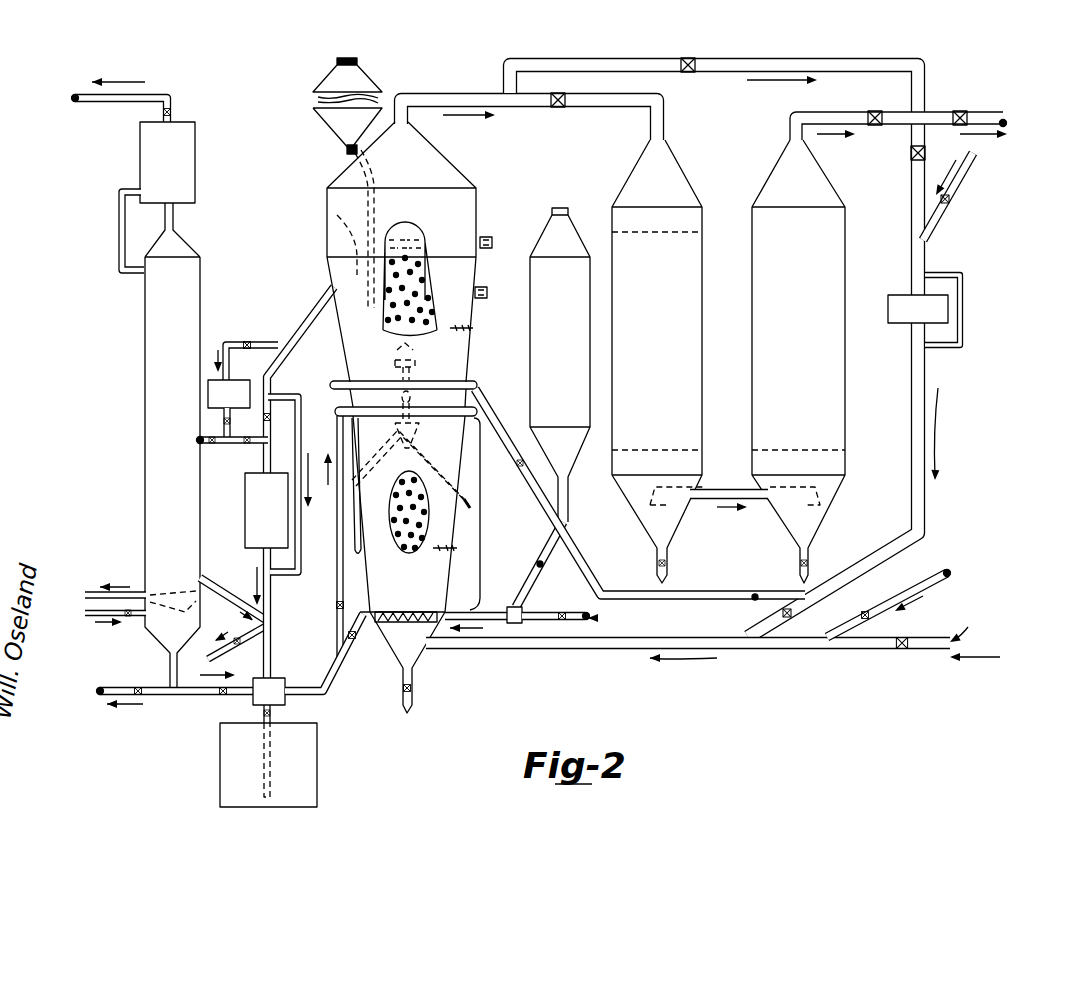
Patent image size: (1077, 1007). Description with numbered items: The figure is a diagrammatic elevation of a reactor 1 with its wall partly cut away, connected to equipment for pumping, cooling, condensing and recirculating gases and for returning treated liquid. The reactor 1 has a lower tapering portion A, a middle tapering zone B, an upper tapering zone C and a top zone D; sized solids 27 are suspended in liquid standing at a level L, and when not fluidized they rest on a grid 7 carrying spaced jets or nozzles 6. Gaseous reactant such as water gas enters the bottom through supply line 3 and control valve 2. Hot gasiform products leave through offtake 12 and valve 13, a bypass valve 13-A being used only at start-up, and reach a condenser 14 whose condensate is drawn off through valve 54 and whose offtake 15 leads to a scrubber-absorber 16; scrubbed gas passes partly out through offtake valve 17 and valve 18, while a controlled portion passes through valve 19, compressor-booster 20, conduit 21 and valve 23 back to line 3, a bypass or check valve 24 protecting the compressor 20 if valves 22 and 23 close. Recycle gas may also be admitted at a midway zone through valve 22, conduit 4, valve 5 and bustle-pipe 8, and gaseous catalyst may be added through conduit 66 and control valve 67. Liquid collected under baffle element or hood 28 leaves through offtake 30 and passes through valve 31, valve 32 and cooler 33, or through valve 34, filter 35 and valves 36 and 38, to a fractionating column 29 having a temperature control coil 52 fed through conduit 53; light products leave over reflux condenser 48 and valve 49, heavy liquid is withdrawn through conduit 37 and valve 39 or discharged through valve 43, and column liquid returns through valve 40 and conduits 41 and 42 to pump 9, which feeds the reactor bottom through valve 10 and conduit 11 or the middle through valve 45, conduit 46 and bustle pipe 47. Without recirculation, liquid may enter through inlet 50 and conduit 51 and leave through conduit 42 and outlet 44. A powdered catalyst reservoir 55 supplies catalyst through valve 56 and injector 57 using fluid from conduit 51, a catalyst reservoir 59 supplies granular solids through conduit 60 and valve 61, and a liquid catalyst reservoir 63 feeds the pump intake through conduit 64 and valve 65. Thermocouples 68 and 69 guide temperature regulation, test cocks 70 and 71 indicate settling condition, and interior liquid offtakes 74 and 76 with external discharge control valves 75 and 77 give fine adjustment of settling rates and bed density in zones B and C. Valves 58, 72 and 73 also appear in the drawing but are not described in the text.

The reactor 1 is at (328, 188).
The control valve 2 is at (900, 652).
The supply line 3 is at (620, 641).
The conduit 4 is at (592, 573).
The valve 5 is at (640, 492).
The jets or nozzles 6 is at (420, 597).
The grid 7 is at (428, 620).
The bustle-pipe 8 is at (470, 381).
The pump 9 is at (282, 684).
The valve 10 is at (357, 637).
The conduit 11 is at (350, 652).
The offtake 12 is at (468, 93).
The valve 13 is at (552, 106).
The bypass valve 13-A is at (689, 73).
The condenser 14 is at (637, 165).
The offtake 15 is at (733, 490).
The scrubber-absorber 16 is at (783, 164).
The offtake valve 17 is at (875, 111).
The valve 18 is at (961, 111).
The valve 19 is at (910, 156).
The compressor-booster 20 is at (900, 302).
The conduit 21 is at (917, 428).
The valve 22 is at (753, 595).
The valve 23 is at (793, 614).
The bypass control valve or check valve 24 is at (963, 309).
The solids 27 is at (390, 313).
The baffle element or hood 28 is at (337, 215).
The fractionating column 29 is at (182, 252).
The offtake 30 is at (303, 298).
The valve 31 is at (282, 420).
The valve 32 is at (247, 447).
The cooler 33 is at (251, 522).
The valve 34 is at (205, 332).
The filter 35 is at (292, 300).
The valve 36 is at (216, 424).
The conduit 37 is at (171, 660).
The valve 38 is at (213, 447).
The valve 39 is at (222, 696).
The valve 40 is at (218, 585).
The conduit 41 is at (233, 602).
The conduit 42 is at (277, 613).
The valve 43 is at (137, 688).
The liquid outlet 44 is at (237, 647).
The valve 45 is at (337, 611).
The conduit 46 is at (337, 580).
The bustle pipe 47 is at (372, 411).
The reflux condenser 48 is at (140, 154).
The valve 49 is at (163, 114).
The liquid inlet 50 is at (565, 614).
The conduit 51 is at (480, 612).
The temperature control coil 52 is at (170, 598).
The conduit 53 is at (128, 617).
The valve 54 is at (669, 565).
The powdered catalyst reservoir 55 is at (578, 224).
The valve 56 is at (538, 575).
The injector 57 is at (523, 612).
The valve 58 is at (413, 690).
The catalyst reservoir 59 is at (335, 83).
The conduit 60 is at (348, 149).
The valve 61 is at (347, 152).
The liquid catalyst reservoir 63 is at (358, 791).
The conduit 64 is at (272, 740).
The valve 65 is at (273, 710).
The conduit 66 is at (961, 179).
The control valve 67 is at (947, 205).
The thermocouple 68 is at (450, 548).
The thermocouple 69 is at (480, 331).
The test cock 70 is at (488, 292).
The test cock 71 is at (493, 245).
The valve 72 is at (866, 610).
The line 73 is at (298, 432).
The interior liquid offtake 74 is at (395, 358).
The external liquid-discharge control valve 75 is at (345, 565).
The interior liquid offtake 76 is at (430, 440).
The external liquid-discharge control valve 77 is at (517, 464).
The lower tapering portion A is at (490, 470).
The middle tapering zone B is at (510, 360).
The upper tapering zone C is at (498, 255).
The top zone D is at (495, 193).
The liquid level L is at (395, 235).